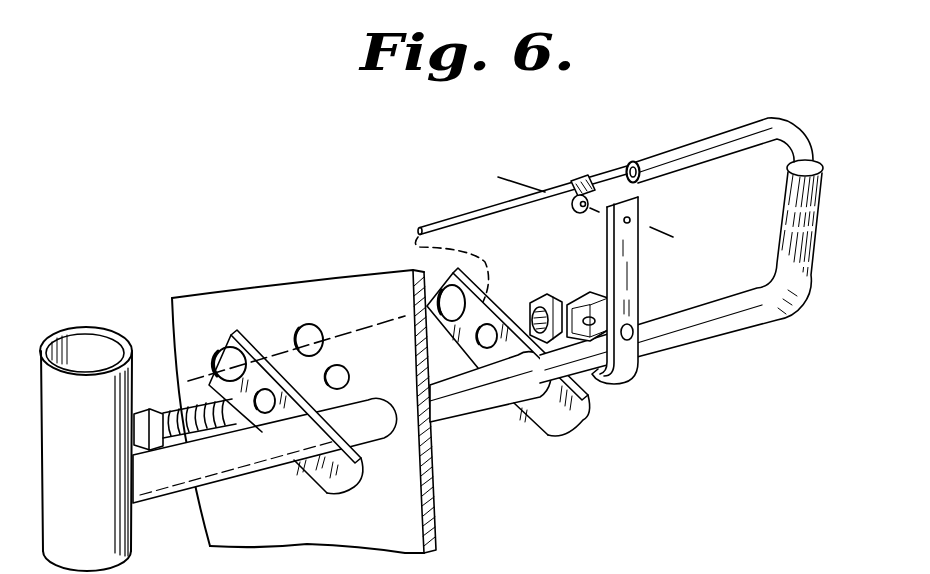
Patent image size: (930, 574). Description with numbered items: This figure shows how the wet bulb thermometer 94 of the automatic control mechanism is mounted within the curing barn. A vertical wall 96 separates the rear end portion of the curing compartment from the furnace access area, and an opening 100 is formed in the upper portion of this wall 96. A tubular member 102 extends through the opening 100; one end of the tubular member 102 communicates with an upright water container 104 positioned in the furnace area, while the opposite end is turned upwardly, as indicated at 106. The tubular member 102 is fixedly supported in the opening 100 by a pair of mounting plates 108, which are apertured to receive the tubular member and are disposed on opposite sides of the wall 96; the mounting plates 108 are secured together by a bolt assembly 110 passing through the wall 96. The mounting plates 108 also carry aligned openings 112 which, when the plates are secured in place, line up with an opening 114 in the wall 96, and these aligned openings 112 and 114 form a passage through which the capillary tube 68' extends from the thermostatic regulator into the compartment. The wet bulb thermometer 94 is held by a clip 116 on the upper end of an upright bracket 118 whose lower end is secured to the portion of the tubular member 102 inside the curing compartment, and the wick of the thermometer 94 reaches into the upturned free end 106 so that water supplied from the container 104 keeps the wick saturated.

The wet bulb thermometer 94 is at (762, 127).
The clip 116 is at (597, 160).
The capillary tube 68' is at (430, 273).
The upwardly turned end of the tubular member 106 is at (790, 205).
The upright bracket 118 is at (631, 293).
The aligned openings 112 is at (219, 348).
The opening in the wall 114 is at (317, 332).
The bolt assembly 110 is at (176, 408).
The upright water container 104 is at (110, 546).
The mounting plates 108 is at (332, 484).
The opening in the wall 100 is at (392, 447).
The tubular member 102 is at (497, 398).
The vertical wall 96 is at (416, 522).